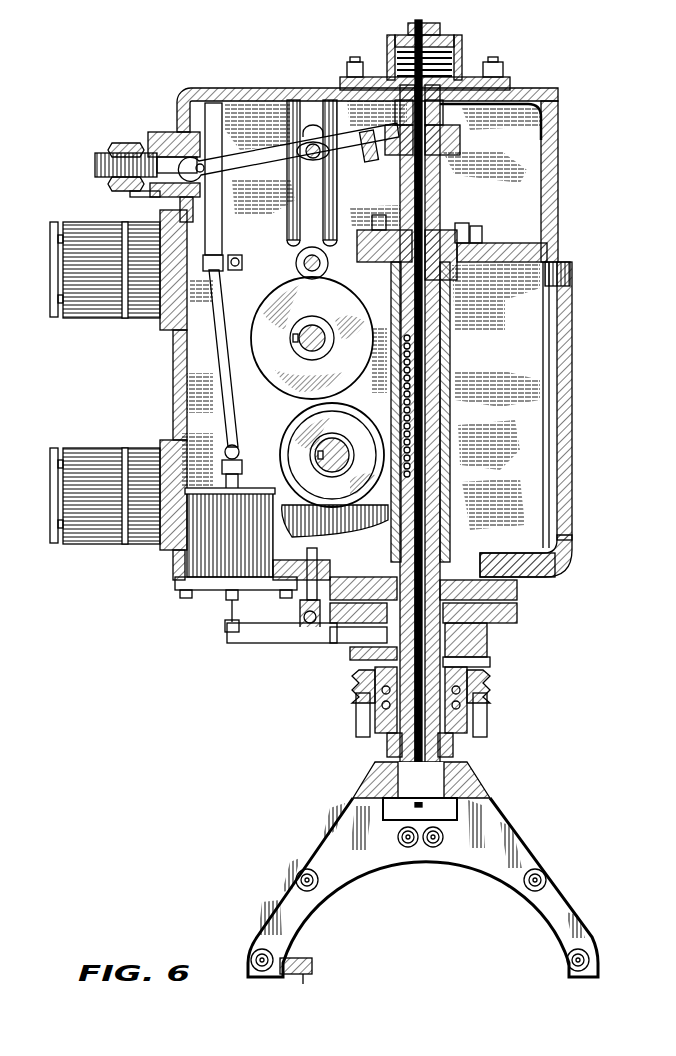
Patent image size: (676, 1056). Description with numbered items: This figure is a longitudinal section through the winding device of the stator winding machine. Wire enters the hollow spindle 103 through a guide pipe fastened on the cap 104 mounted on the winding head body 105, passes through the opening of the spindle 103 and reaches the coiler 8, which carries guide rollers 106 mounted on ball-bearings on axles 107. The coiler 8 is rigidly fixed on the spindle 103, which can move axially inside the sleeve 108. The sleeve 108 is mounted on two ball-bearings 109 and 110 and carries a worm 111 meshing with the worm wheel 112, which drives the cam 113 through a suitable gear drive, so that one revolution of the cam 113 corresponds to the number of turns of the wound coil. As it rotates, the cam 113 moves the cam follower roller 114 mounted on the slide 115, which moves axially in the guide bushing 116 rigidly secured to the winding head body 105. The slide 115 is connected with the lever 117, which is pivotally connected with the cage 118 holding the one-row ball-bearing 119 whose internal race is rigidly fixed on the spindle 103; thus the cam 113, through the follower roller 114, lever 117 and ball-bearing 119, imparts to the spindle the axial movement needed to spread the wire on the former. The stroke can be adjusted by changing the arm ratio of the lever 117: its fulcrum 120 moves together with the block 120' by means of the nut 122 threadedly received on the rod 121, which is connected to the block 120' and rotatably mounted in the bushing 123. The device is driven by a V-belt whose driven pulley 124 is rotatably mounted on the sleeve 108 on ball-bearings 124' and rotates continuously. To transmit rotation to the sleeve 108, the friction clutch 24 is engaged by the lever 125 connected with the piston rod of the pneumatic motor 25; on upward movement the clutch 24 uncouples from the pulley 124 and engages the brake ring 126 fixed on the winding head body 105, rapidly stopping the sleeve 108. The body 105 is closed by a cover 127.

The coiler 8 is at (490, 800).
The friction clutch 24 is at (512, 603).
The pneumatic motor 25 is at (217, 505).
The hollow spindle 103 is at (430, 183).
The cap 104 is at (462, 60).
The winding head body 105 is at (242, 266).
The guide rollers 106 is at (546, 876).
The axles 107 is at (300, 958).
The sleeve 108 is at (445, 248).
The ball-bearing 109 is at (490, 258).
The ball-bearing 110 is at (500, 520).
The worm 111 is at (452, 458).
The worm wheel 112 is at (370, 440).
The cam 113 is at (365, 347).
The cam follower roller 114 is at (257, 320).
The slide 115 is at (298, 270).
The guide bushing 116 is at (182, 89).
The lever 117 is at (240, 160).
The cage 118 is at (483, 137).
The one-row ball-bearing 119 is at (462, 152).
The fulcrum 120 is at (238, 205).
The block 120' is at (237, 173).
The rod 121 is at (105, 153).
The nut 122 is at (112, 150).
The bushing 123 is at (137, 197).
The driven pulley 124 is at (466, 630).
The ball-bearings 124' is at (447, 709).
The lever 125 is at (225, 632).
The brake ring 126 is at (265, 634).
The cover 127 is at (570, 265).